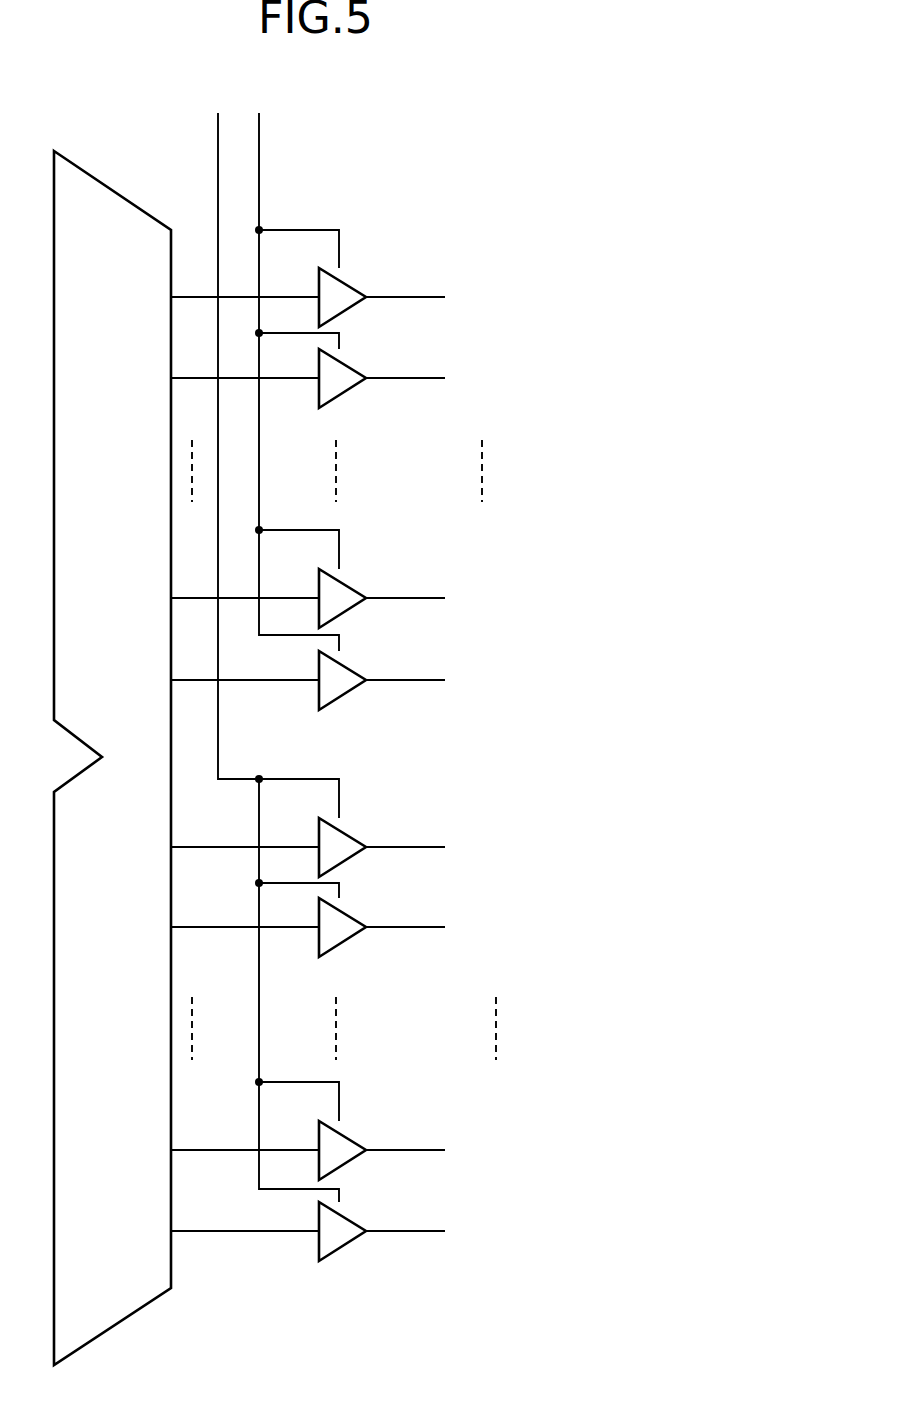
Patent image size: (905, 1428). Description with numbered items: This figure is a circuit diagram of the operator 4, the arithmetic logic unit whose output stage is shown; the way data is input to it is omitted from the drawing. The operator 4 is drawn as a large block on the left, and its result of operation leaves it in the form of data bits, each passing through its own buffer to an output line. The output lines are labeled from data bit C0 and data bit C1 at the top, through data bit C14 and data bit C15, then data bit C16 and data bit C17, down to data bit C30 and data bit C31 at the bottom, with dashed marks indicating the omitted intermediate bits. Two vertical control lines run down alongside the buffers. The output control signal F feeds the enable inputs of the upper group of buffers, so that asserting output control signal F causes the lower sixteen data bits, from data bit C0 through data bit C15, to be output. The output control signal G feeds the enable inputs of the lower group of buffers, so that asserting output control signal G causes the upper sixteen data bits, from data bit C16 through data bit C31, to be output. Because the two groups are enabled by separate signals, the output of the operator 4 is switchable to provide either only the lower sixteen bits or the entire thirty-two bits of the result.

The operator 4 is at (284, 1325).
The output control signal G is at (386, 638).
The output control signal F is at (451, 382).
The data bit C0 is at (333, 297).
The data bit C1 is at (333, 378).
The data bit C14 is at (340, 598).
The data bit C15 is at (340, 680).
The data bit C16 is at (340, 847).
The data bit C17 is at (340, 927).
The data bit C30 is at (340, 1150).
The data bit C31 is at (340, 1231).